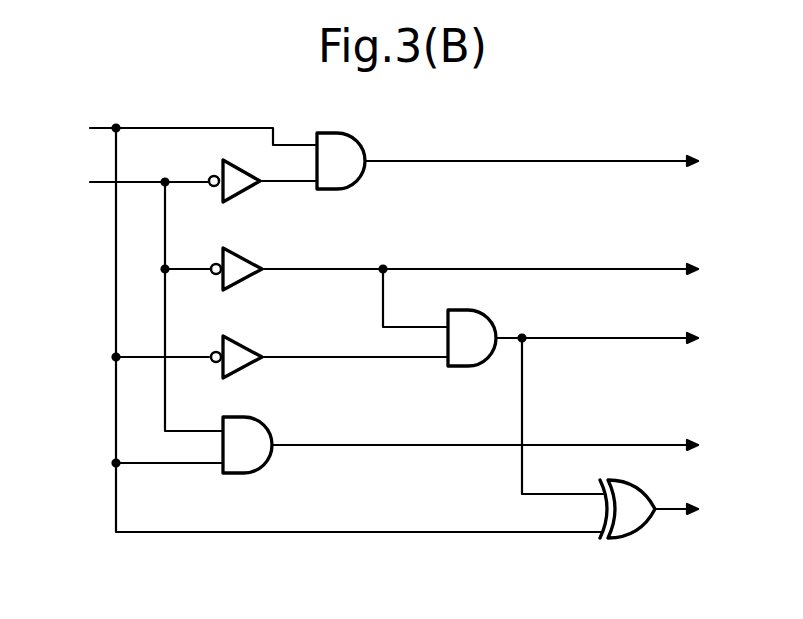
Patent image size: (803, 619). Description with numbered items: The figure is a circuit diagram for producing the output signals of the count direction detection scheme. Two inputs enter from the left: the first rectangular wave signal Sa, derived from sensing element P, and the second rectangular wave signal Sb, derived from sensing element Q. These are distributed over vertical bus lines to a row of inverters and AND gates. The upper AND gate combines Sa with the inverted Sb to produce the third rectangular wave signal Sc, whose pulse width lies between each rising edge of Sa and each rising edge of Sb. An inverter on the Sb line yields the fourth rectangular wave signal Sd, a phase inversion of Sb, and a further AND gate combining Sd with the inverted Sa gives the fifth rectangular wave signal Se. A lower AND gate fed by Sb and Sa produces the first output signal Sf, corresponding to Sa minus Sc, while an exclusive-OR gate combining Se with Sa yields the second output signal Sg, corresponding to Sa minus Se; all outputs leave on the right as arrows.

The first rectangular wave signal Sa is at (326, 324).
The second rectangular wave signal Sb is at (136, 300).
The third rectangular wave signal Sc is at (655, 159).
The fourth rectangular wave signal Sd is at (657, 267).
The fifth rectangular wave signal Se is at (657, 336).
The first output signal Sf is at (657, 443).
The second output signal Sg is at (679, 511).